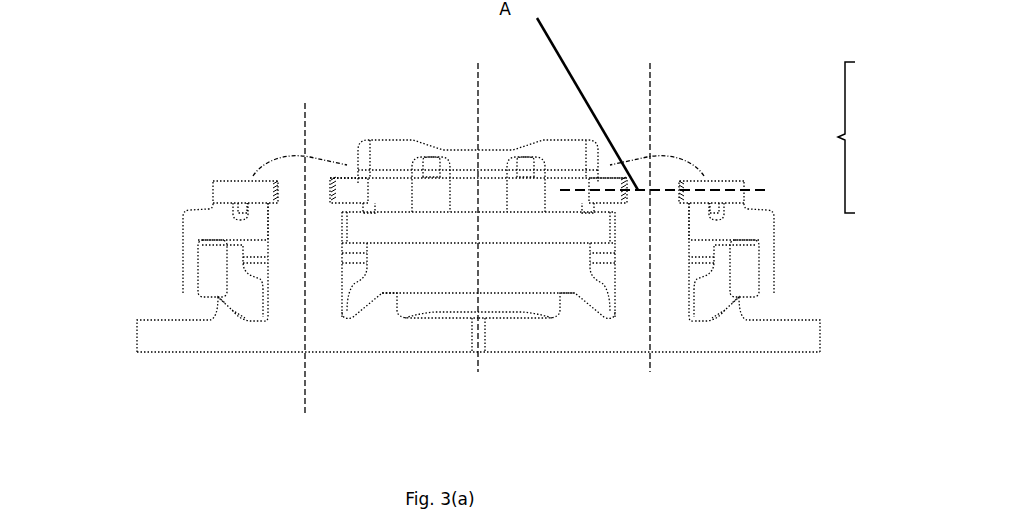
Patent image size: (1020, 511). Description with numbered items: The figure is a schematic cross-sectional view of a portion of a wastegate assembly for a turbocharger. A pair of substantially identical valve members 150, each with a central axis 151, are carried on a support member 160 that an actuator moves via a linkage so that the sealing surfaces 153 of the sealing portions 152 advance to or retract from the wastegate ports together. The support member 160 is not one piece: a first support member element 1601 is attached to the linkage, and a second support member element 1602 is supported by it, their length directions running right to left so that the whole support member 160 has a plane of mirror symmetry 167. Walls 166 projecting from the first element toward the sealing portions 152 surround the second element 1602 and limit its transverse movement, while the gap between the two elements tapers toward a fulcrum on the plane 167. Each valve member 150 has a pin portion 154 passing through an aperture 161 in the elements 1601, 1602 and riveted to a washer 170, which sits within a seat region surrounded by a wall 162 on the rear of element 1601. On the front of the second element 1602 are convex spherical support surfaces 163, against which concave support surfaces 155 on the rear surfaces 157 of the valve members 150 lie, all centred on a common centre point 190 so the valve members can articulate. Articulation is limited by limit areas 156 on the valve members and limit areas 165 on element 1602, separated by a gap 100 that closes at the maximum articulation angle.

The gap 100 is at (560, 297).
The valve member 150 is at (620, 340).
The central axis 151 is at (650, 63).
The sealing portion 152 is at (788, 337).
The sealing surface 153 is at (538, 353).
The pin portion 154 is at (633, 157).
The concave support surface 155 is at (718, 305).
The limit area 156 is at (735, 295).
The rear surface 157 is at (798, 315).
The support member 160 is at (876, 137).
The aperture 161 is at (692, 222).
The wall 162 is at (737, 200).
The first support member element 1601 is at (733, 205).
The second support member element 1602 is at (735, 258).
The convex support surface 163 is at (587, 303).
The limit area 165 is at (735, 290).
The wall 166 is at (780, 285).
The plane of mirror symmetry 167 is at (475, 93).
The washer 170 is at (713, 177).
The common centre point 190 is at (650, 235).